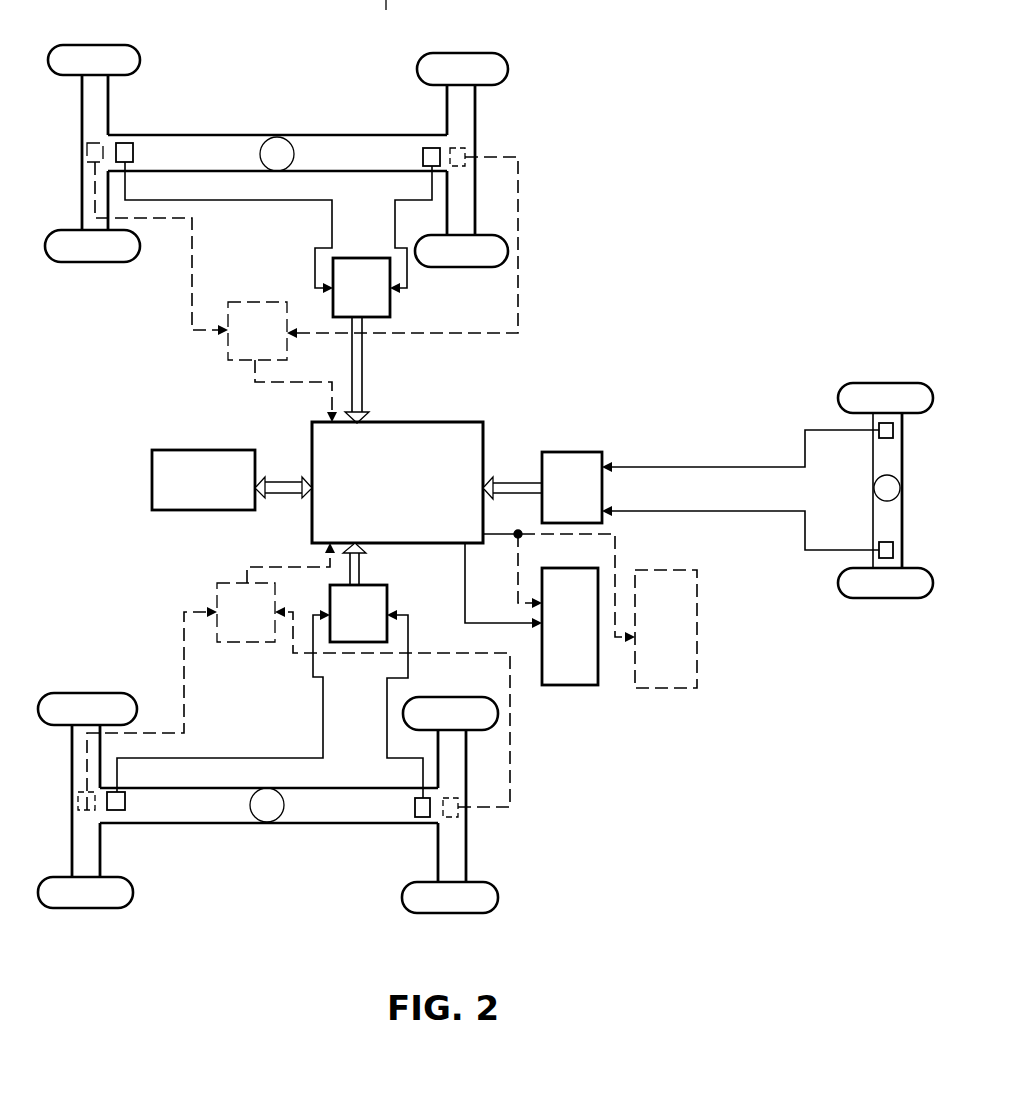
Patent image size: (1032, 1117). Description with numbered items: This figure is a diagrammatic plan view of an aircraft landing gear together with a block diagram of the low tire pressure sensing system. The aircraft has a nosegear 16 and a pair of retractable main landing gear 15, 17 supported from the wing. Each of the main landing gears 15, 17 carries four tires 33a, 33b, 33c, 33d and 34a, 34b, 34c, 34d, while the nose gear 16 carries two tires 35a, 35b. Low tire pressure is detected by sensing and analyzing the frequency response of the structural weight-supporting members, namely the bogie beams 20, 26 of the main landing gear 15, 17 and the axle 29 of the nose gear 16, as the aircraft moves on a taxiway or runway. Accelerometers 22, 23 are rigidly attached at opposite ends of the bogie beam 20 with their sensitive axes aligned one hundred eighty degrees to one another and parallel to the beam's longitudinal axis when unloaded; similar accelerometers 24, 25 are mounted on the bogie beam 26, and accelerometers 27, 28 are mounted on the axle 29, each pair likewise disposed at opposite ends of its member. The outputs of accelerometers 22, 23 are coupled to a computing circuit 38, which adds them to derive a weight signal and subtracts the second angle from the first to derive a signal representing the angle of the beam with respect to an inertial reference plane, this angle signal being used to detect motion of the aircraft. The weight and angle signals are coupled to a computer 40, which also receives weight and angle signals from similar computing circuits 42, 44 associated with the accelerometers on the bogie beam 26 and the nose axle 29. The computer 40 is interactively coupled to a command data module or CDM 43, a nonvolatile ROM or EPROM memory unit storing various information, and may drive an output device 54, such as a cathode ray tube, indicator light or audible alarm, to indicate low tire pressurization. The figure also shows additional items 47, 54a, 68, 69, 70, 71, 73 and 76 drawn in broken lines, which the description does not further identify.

The main landing gear 15 is at (257, 834).
The nosegear 16 is at (822, 406).
The main landing gear 17 is at (237, 128).
The bogie beam 20 is at (345, 816).
The accelerometer 22 is at (115, 794).
The accelerometer 23 is at (417, 799).
The accelerometer 24 is at (125, 143).
The accelerometer 25 is at (432, 148).
The bogie beam 26 is at (343, 145).
The accelerometer 27 is at (878, 433).
The accelerometer 28 is at (878, 550).
The axle 29 is at (893, 468).
The tire 33a is at (470, 906).
The tire 33b is at (480, 710).
The tire 33c is at (117, 705).
The tire 33d is at (128, 901).
The tire 34a is at (484, 258).
The tire 34b is at (487, 73).
The tire 34c is at (75, 45).
The tire 34d is at (127, 257).
The tire 35a is at (890, 392).
The tire 35b is at (903, 588).
The computing circuit 38 is at (380, 598).
The computer 40 is at (397, 482).
The computing circuit 42 is at (385, 306).
The command data module (CDM) 43 is at (222, 457).
The computing circuit 44 is at (589, 428).
The reference numeral (partially shown) 47 is at (400, 7).
The output device 54 is at (531, 607).
The auxiliary steering actuator 54a is at (609, 611).
The alternative wheel angle sensor 68 is at (91, 812).
The alternative wheel angle sensor 69 is at (445, 819).
The alternative wheel angle sensor 70 is at (87, 153).
The alternative wheel angle sensor 71 is at (466, 156).
The alternative signal processor 73 is at (248, 333).
The alternative signal processor 76 is at (225, 592).